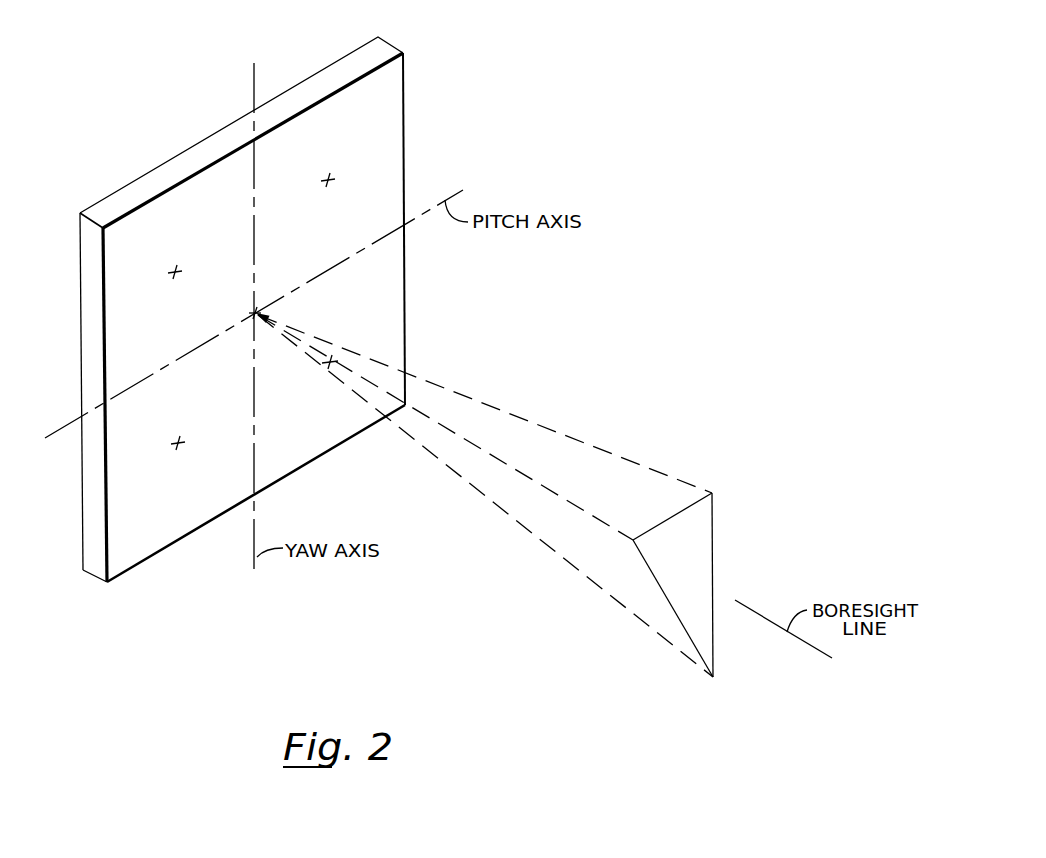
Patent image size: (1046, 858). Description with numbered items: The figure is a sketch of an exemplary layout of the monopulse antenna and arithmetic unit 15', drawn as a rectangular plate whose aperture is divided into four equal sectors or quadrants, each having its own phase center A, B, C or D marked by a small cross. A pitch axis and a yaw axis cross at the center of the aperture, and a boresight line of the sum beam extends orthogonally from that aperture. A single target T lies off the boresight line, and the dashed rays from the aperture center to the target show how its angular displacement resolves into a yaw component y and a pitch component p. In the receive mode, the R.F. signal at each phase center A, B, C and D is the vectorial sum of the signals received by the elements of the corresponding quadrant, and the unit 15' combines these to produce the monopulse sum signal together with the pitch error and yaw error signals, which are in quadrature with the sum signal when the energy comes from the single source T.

The monopulse antenna and arithmetic unit 15' is at (380, 297).
The phase center A is at (326, 176).
The phase center B is at (170, 268).
The phase center C is at (326, 356).
The phase center D is at (175, 438).
The yaw error y is at (667, 520).
The pitch error p is at (713, 562).
The target T is at (713, 677).